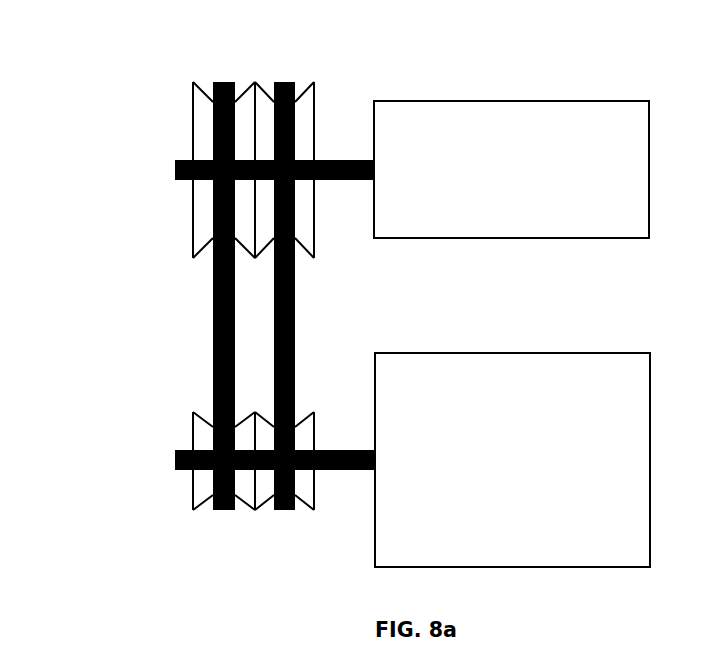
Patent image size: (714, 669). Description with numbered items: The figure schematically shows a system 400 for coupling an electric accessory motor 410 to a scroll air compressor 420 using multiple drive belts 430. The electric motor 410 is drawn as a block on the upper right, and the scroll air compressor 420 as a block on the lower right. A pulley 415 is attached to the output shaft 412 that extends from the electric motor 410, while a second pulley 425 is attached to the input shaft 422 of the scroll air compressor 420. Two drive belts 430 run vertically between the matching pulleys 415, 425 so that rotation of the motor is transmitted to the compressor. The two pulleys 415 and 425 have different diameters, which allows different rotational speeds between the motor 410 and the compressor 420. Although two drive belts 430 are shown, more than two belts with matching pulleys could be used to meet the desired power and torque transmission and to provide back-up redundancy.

The system 400 is at (440, 60).
The electric accessory motor 410 is at (487, 101).
The output shaft 412 is at (173, 181).
The pulley 415 is at (193, 102).
The scroll air compressor 420 is at (470, 352).
The input shaft 422 is at (175, 471).
The pulley 425 is at (193, 432).
The drive belts 430 is at (213, 313).